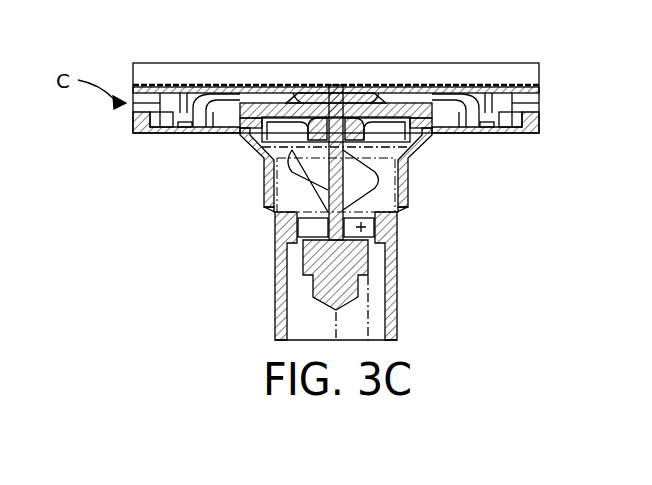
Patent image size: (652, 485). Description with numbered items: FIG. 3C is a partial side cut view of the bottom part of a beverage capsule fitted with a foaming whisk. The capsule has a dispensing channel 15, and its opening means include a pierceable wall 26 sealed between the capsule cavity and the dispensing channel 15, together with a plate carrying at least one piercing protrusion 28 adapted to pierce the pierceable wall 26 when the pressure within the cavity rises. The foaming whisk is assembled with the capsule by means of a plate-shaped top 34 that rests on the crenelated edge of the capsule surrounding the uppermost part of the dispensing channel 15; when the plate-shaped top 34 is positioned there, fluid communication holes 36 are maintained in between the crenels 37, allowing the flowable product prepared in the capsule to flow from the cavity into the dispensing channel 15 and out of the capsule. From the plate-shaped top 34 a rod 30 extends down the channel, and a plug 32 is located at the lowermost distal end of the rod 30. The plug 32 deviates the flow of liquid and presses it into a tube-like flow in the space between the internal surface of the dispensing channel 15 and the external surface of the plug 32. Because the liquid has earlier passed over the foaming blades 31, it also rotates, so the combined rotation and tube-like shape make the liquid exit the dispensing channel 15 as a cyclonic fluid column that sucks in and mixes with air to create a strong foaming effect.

The dispensing channel 15 is at (397, 222).
The pierceable wall 26 is at (549, 84).
The piercing protrusion 28 is at (493, 108).
The rod 30 is at (320, 168).
The foaming blades 31 is at (368, 190).
The plug 32 is at (305, 270).
The plate-shaped top 34 is at (328, 95).
The fluid communication holes 36 is at (387, 108).
The crenels 37 is at (248, 122).